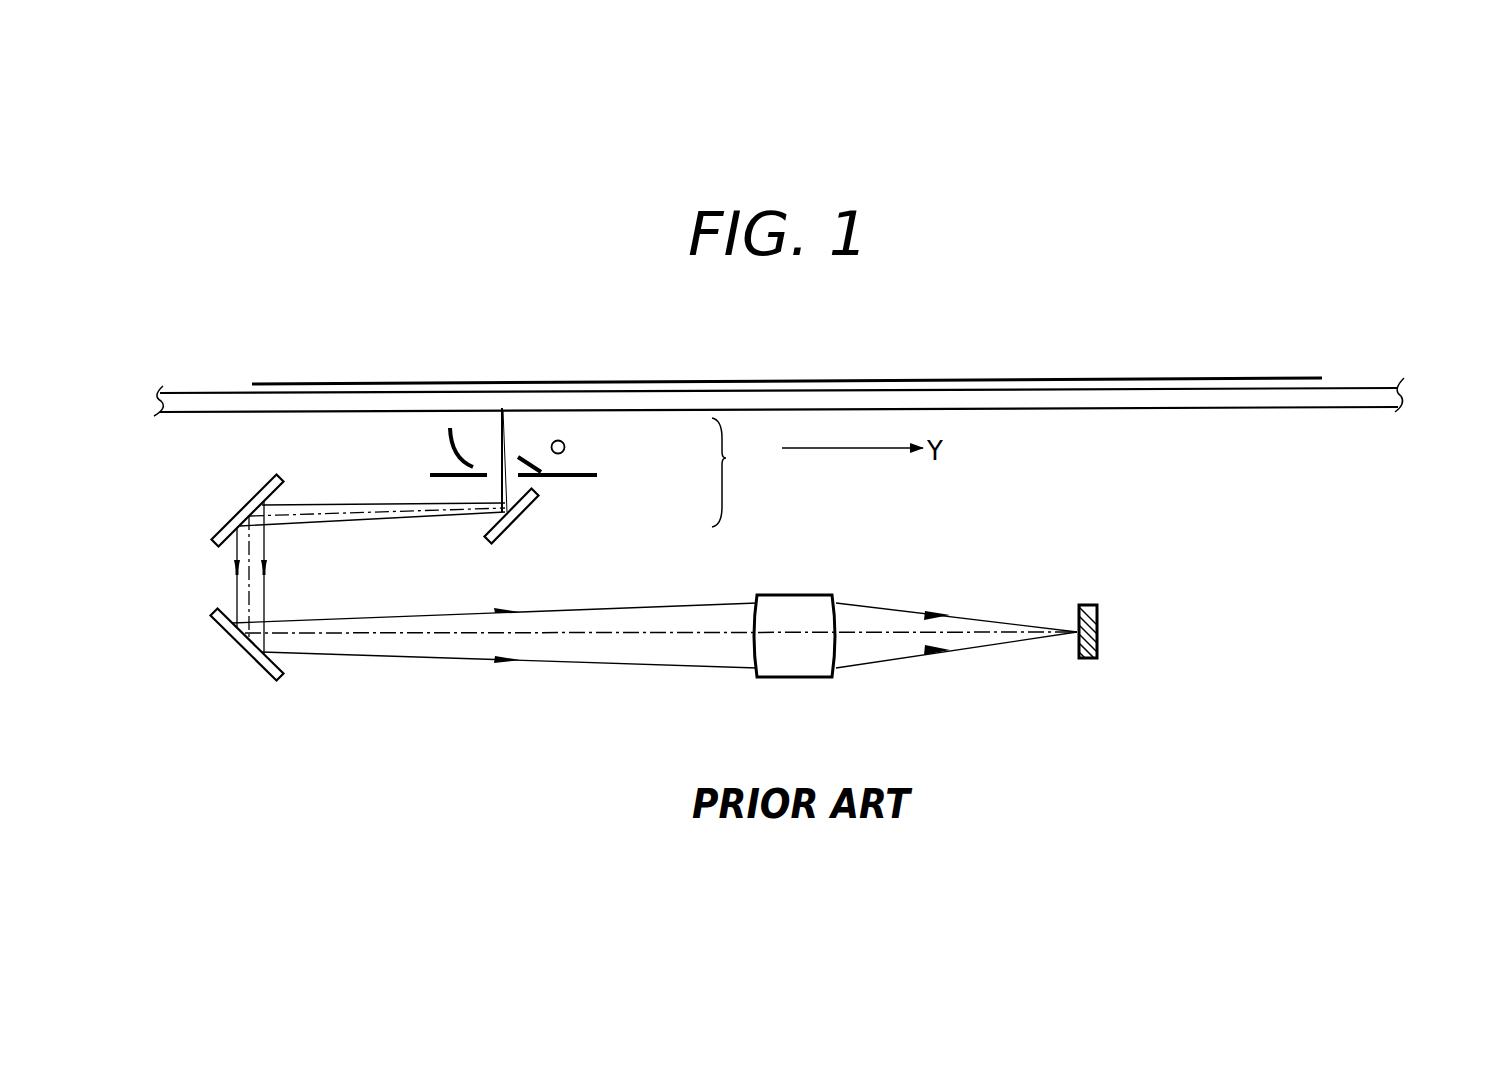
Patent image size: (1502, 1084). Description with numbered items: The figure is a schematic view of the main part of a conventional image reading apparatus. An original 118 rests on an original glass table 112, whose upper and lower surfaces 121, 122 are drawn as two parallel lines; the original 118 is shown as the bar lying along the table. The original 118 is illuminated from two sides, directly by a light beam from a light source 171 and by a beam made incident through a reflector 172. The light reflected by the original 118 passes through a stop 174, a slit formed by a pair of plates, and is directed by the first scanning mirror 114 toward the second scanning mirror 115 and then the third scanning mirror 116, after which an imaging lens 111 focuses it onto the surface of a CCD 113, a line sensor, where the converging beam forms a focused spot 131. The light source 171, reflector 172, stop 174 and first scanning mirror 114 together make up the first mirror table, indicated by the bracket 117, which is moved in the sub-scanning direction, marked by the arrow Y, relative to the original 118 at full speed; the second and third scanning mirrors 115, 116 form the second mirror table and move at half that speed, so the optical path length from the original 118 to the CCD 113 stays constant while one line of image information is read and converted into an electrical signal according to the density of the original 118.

The imaging lens 111 is at (792, 678).
The original glass table 112 is at (822, 407).
The CCD 113 is at (1097, 640).
The first scanning mirror 114 is at (517, 514).
The second scanning mirror 115 is at (242, 507).
The third scanning mirror 116 is at (238, 643).
The optical head assembly 117 is at (598, 471).
The original 118 is at (1280, 378).
The upper surface 121 is at (1362, 388).
The lower surface 122 is at (1347, 408).
The focused light spot 131 is at (1077, 633).
The light source 171 is at (565, 447).
The reflector 172 is at (454, 441).
The stop 174 is at (453, 478).